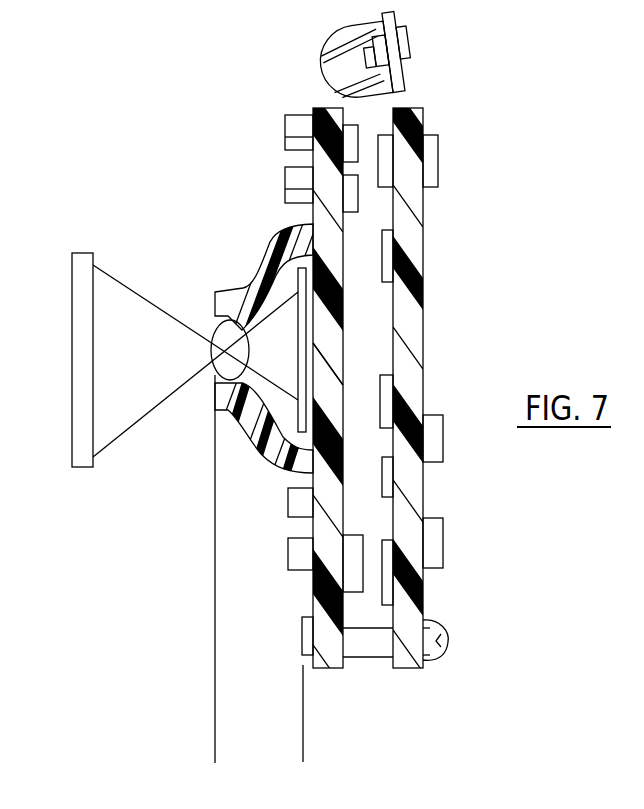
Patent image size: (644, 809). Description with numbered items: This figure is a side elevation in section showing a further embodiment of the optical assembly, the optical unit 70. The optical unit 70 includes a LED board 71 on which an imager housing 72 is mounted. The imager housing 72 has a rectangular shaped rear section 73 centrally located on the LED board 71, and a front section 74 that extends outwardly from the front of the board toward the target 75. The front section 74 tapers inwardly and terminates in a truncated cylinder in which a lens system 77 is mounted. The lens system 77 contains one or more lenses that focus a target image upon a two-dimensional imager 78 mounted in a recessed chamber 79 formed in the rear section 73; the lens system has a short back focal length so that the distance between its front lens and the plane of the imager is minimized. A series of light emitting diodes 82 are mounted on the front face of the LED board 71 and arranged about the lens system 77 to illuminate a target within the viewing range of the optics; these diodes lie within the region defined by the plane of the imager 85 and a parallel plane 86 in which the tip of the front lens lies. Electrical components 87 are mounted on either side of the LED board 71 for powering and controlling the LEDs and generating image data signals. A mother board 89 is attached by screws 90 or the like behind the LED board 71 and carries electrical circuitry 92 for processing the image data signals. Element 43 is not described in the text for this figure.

The mounting plate 43 is at (307, 377).
The optical unit 70 is at (530, 296).
The LED board 71 is at (313, 600).
The imager housing 72 is at (236, 440).
The rear section 73 is at (345, 462).
The front section 74 is at (245, 287).
The target 75 is at (72, 380).
The lens system 77 is at (214, 328).
The 2D imager 78 is at (343, 284).
The recessed chamber 79 is at (343, 325).
The light emitting diodes 82 is at (285, 140).
The plane of the imager 85 is at (310, 718).
The parallel plane 86 is at (215, 716).
The electrical components 87 is at (302, 640).
The mother board 89 is at (425, 600).
The screws 90 is at (447, 650).
The electrical circuitry 92 is at (438, 153).